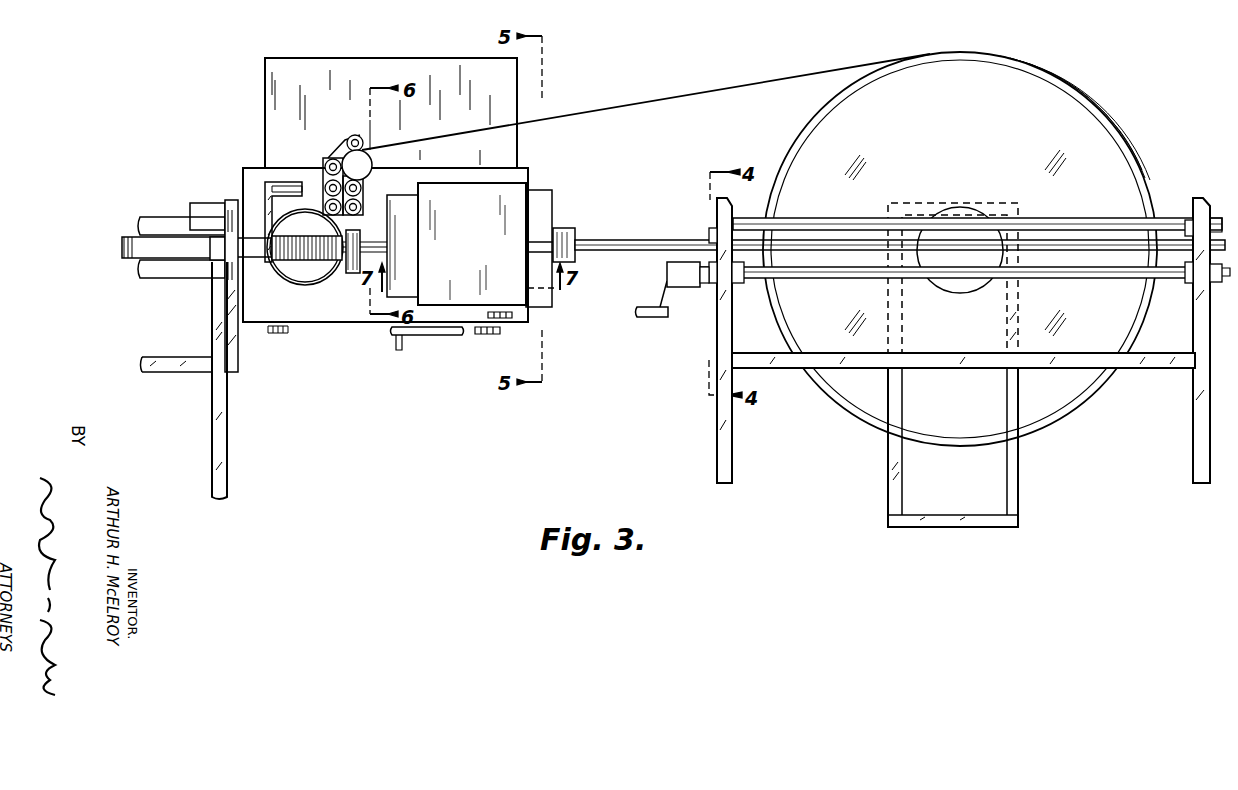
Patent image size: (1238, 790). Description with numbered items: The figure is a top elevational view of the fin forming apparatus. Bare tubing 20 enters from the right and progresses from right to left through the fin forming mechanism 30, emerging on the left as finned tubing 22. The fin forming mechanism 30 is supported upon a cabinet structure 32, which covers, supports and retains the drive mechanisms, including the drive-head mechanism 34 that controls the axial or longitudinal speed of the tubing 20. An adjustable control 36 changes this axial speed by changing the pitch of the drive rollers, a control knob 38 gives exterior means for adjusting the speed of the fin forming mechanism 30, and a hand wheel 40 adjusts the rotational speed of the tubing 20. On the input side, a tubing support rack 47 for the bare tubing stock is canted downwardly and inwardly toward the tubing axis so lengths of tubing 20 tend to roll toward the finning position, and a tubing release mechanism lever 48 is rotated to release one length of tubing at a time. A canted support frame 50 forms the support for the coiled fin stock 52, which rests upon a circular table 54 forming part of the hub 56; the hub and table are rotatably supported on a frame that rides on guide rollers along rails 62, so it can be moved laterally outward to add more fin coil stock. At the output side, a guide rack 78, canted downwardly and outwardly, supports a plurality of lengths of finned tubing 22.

The tubing 20 is at (612, 240).
The finned tubing 22 is at (302, 262).
The fin forming mechanism 30 is at (325, 280).
The cabinet structure 32 is at (302, 326).
The drive-head mechanism 34 is at (481, 257).
The adjustable control 36 is at (512, 315).
The control knob 38 is at (476, 334).
The hand wheel 40 is at (392, 336).
The tubing support rack 47 is at (722, 441).
The tubing release mechanism lever 48 is at (637, 318).
The support frame 50 is at (1172, 369).
The coiled fin stock 52 is at (720, 92).
The circular table 54 is at (1138, 155).
The hub 56 is at (957, 286).
The rails 62 is at (895, 523).
The guide rack 78 is at (222, 466).